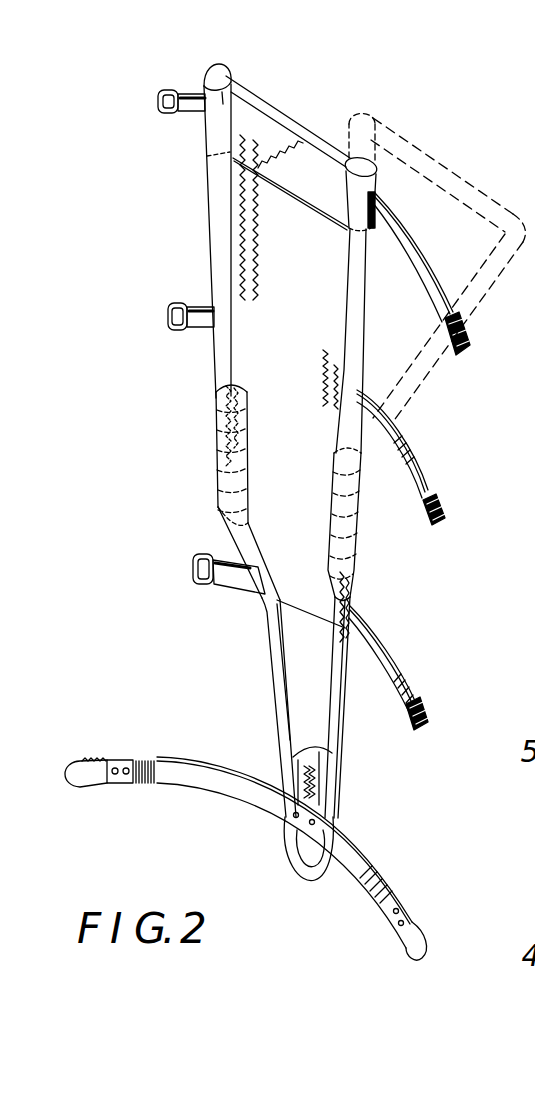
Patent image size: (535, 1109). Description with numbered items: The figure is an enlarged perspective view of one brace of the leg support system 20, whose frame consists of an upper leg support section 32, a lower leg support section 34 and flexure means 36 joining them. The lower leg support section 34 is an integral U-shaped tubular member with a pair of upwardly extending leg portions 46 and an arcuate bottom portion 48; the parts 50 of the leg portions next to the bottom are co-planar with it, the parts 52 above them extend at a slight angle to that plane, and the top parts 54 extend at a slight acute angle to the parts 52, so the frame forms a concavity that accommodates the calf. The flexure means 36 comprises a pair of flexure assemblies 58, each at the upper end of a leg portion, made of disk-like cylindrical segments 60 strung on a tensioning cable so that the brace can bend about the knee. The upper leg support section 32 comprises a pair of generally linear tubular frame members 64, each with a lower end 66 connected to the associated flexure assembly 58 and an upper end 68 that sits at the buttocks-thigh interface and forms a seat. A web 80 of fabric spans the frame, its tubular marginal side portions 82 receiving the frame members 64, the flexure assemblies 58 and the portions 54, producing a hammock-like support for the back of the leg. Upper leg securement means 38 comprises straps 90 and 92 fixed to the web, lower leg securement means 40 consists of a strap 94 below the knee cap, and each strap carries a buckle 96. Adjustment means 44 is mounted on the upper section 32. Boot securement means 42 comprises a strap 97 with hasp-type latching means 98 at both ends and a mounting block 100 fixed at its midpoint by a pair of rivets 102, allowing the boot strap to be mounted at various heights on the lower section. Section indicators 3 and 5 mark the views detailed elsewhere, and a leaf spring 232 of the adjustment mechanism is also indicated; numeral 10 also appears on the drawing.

The section line 3- 3 is at (229, 776).
The section line 5- 5 is at (365, 137).
The lower tube portion 10 is at (225, 382).
The system 20 is at (374, 581).
The upper leg support section 32 is at (370, 368).
The lower leg support section 34 is at (354, 692).
The flexure means 36 is at (222, 470).
The upper leg securement means 38 is at (172, 122).
The lower leg securement means 40 is at (197, 592).
The boot securement means 42 is at (177, 773).
The adjustment means 44 is at (378, 197).
The leg portions 46 is at (325, 708).
The arcuate bottom portion 48 is at (328, 878).
The leg portion parts contiguous with bottom portion 50 is at (328, 770).
The leg portion parts contiguous with portions 50 52 is at (340, 667).
The top of leg portions 54 is at (333, 635).
The flexure assemblies 58 is at (252, 456).
The cylindrical segments 60 is at (343, 515).
The tubular frame members 64 is at (227, 293).
The lower end 66 is at (242, 400).
The upper end 68 is at (223, 120).
The web 80 is at (283, 213).
The tubular marginal side portions 82 is at (217, 229).
The strap 90 is at (188, 92).
The strap 92 is at (203, 307).
The strap 94 is at (238, 577).
The buckle 96 is at (168, 90).
The strap 97 is at (230, 790).
The hasp-type latching means 98 is at (100, 783).
The mounting block 100 is at (310, 803).
The rivets 102 is at (300, 820).
The leaf spring 232 is at (370, 224).